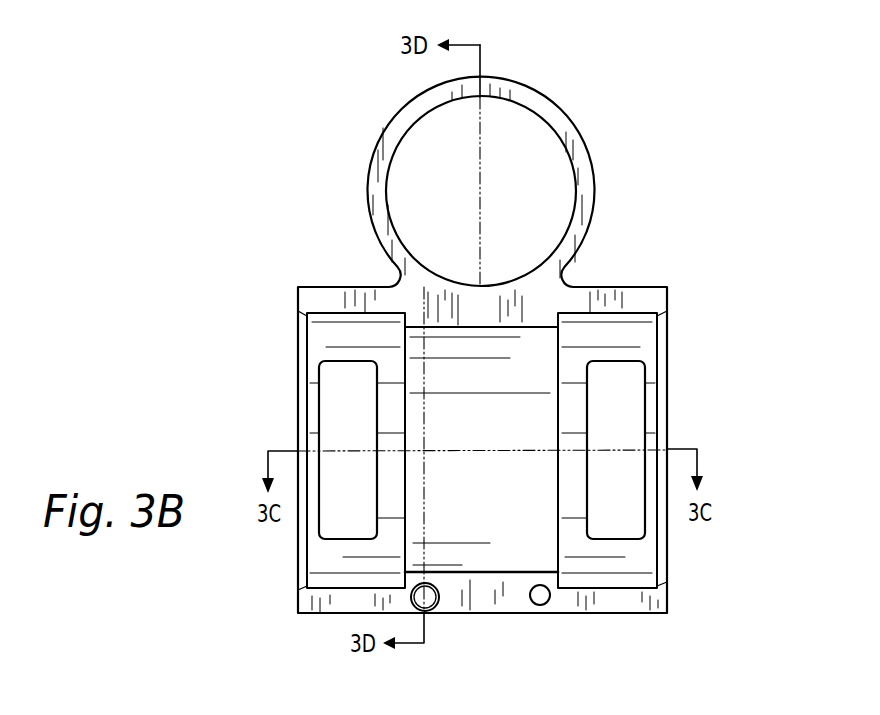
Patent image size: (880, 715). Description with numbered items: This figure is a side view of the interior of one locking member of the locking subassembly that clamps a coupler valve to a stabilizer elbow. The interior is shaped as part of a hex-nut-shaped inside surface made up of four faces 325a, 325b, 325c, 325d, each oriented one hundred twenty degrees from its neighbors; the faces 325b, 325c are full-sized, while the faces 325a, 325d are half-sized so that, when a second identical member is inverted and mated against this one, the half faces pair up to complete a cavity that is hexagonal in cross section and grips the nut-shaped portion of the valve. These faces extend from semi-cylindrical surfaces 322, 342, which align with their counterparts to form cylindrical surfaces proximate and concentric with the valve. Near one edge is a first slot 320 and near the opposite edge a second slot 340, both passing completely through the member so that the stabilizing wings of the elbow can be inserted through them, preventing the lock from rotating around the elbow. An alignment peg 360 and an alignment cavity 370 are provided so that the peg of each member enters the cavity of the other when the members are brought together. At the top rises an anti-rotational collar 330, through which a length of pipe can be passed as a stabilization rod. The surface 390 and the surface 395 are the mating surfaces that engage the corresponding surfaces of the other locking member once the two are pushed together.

The first slot 320 is at (642, 388).
The semi-cylindrical surface 322 is at (630, 562).
The half-sized face 325a is at (477, 333).
The full-sized face 325b is at (527, 352).
The full-sized face 325c is at (520, 537).
The half-sized face 325d is at (474, 566).
The anti-rotational collar 330 is at (376, 178).
The second slot 340 is at (340, 372).
The semi-cylindrical surface 342 is at (338, 573).
The alignment peg 360 is at (544, 604).
The alignment cavity 370 is at (438, 588).
The surface 390 is at (352, 604).
The surface 395 is at (337, 295).